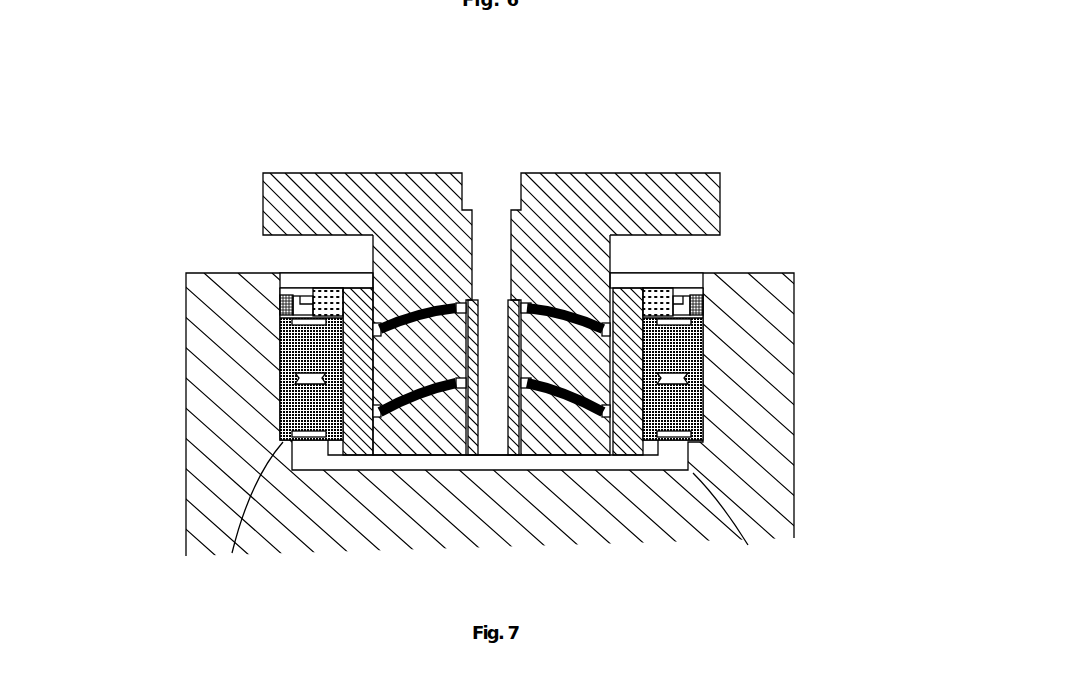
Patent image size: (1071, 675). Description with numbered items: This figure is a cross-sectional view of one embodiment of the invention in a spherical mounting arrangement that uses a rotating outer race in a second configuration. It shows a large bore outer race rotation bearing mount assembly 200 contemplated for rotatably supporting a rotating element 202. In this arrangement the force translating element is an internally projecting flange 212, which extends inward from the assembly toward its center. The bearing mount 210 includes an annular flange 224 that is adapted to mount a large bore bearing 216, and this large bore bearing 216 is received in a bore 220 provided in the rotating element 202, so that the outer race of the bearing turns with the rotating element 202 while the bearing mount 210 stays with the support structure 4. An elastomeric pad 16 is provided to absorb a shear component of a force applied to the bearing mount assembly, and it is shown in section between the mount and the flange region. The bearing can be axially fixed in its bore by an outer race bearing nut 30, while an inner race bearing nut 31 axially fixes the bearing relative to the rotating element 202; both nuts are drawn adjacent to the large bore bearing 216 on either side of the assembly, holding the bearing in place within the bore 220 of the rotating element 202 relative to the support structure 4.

The support structure 4 is at (402, 190).
The elastomeric pad 16 is at (590, 393).
The outer race bearing nut 30 is at (705, 301).
The inner race bearing nut 31 is at (283, 292).
The large bore outer race rotation bearing mount assembly 200 is at (706, 57).
The rotating element 202 is at (186, 432).
The bearing mount 210 is at (376, 336).
The internally projecting flange 212 is at (560, 305).
The large bore bearing 216 is at (282, 397).
The bore 220 is at (689, 447).
The annular flange 224 is at (627, 292).